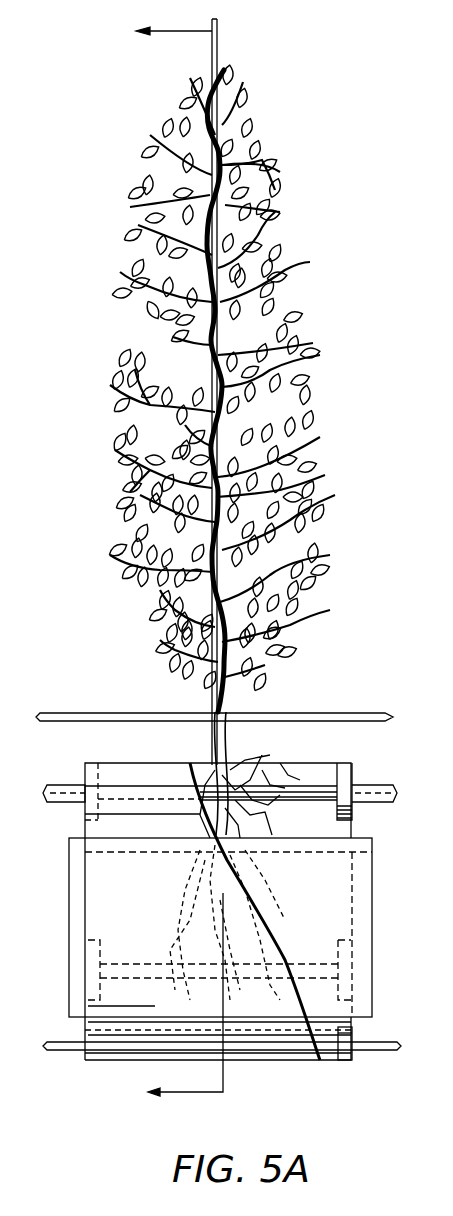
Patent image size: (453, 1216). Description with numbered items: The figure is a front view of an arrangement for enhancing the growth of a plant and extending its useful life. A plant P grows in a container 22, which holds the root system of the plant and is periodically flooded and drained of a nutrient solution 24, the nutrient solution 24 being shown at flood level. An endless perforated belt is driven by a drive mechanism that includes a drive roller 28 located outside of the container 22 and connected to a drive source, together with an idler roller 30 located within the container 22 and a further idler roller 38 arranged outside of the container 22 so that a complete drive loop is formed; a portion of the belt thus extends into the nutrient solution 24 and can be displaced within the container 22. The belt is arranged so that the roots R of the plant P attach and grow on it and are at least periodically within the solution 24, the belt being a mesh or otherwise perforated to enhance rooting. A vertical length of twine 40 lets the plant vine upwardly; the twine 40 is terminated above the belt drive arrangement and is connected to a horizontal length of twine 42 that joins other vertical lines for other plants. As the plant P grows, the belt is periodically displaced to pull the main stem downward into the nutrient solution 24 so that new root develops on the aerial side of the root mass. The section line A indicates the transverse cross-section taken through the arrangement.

The section line A- A is at (167, 562).
The plant P is at (320, 540).
The roots R is at (262, 807).
The container 22 is at (70, 914).
The nutrient solution 24 is at (92, 845).
The drive roller 28 is at (352, 772).
The idler roller 30 is at (90, 985).
The idler roller 38 is at (352, 1062).
The twine 40 is at (227, 700).
The horizontal length of twine 42 is at (338, 712).